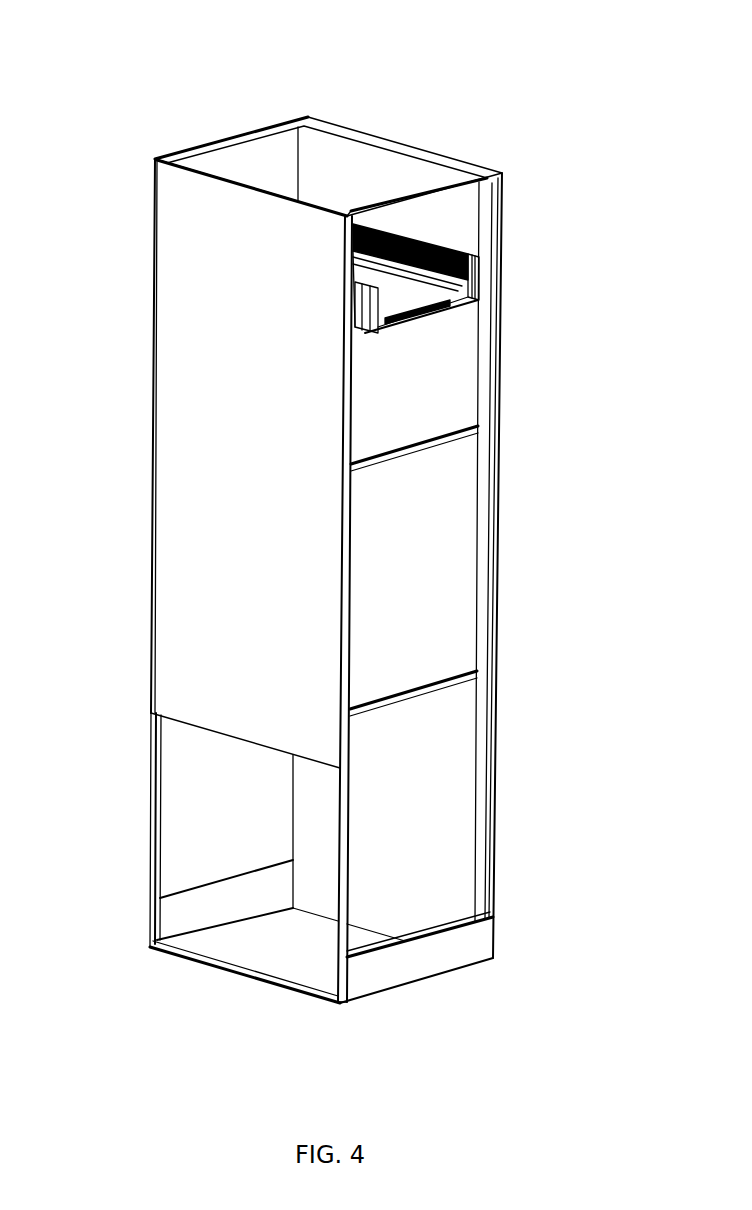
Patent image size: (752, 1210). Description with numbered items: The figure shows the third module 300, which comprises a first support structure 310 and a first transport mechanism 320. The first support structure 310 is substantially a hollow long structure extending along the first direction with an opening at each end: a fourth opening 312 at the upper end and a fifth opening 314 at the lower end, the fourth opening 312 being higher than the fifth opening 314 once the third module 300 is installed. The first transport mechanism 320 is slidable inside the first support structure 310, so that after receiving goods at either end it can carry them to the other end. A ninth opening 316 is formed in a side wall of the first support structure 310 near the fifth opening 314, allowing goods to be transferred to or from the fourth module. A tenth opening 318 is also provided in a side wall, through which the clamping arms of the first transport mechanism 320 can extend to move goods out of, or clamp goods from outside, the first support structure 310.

The third module 300 is at (307, 45).
The first support structure 310 is at (203, 462).
The fourth opening 312 is at (353, 163).
The fifth opening 314 is at (247, 957).
The ninth opening 316 is at (199, 813).
The tenth opening 318 is at (443, 575).
The first transport mechanism 320 is at (477, 283).